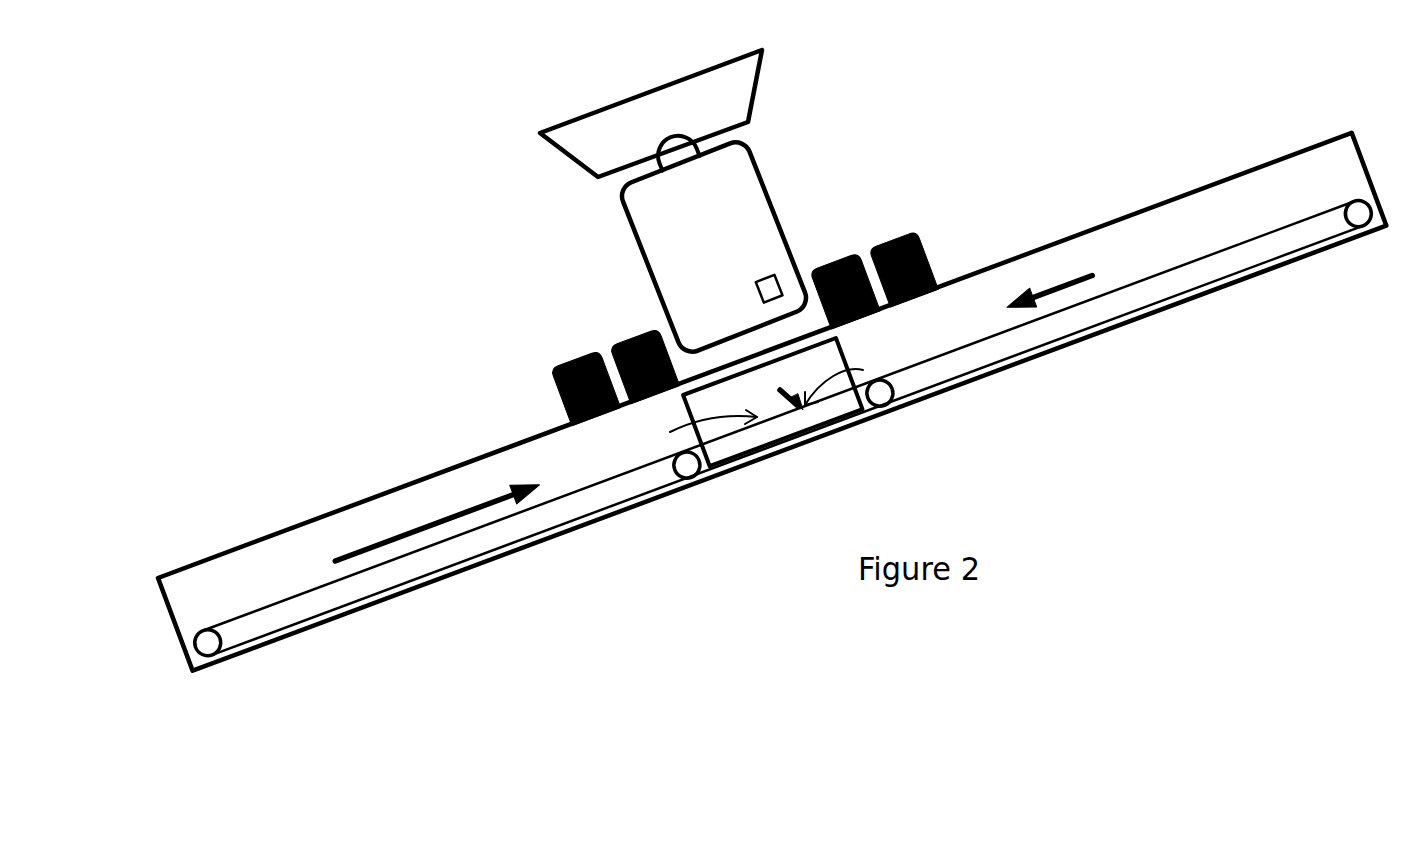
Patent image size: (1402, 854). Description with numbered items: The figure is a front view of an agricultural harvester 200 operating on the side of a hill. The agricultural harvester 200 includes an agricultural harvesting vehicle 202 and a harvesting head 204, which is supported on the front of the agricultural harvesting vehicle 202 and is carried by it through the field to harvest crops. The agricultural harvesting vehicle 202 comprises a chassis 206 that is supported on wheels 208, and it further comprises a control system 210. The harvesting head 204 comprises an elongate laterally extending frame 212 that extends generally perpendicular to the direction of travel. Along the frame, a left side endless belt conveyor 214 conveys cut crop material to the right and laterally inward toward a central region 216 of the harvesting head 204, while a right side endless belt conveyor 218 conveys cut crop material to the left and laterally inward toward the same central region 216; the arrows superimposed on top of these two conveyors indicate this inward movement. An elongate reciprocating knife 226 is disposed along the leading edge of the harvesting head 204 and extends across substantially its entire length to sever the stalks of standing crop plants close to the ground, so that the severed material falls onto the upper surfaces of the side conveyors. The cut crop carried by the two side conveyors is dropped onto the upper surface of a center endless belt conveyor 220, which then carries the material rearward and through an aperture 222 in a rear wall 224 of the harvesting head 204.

The agricultural harvester 200 is at (270, 191).
The agricultural harvesting vehicle 202 is at (813, 155).
The harvesting head 204 is at (1070, 207).
The chassis 206 is at (657, 323).
The wheels 208 is at (617, 340).
The control system 210 is at (765, 277).
The elongate laterally extending frame 212 is at (468, 462).
The left side endless belt conveyor 214 is at (1170, 267).
The central region 216 is at (784, 478).
The right side endless belt conveyor 218 is at (318, 590).
The center endless belt conveyor 220 is at (783, 422).
The aperture 222 is at (835, 420).
The rear wall 224 is at (570, 462).
The elongate reciprocating knife 226 is at (1222, 284).